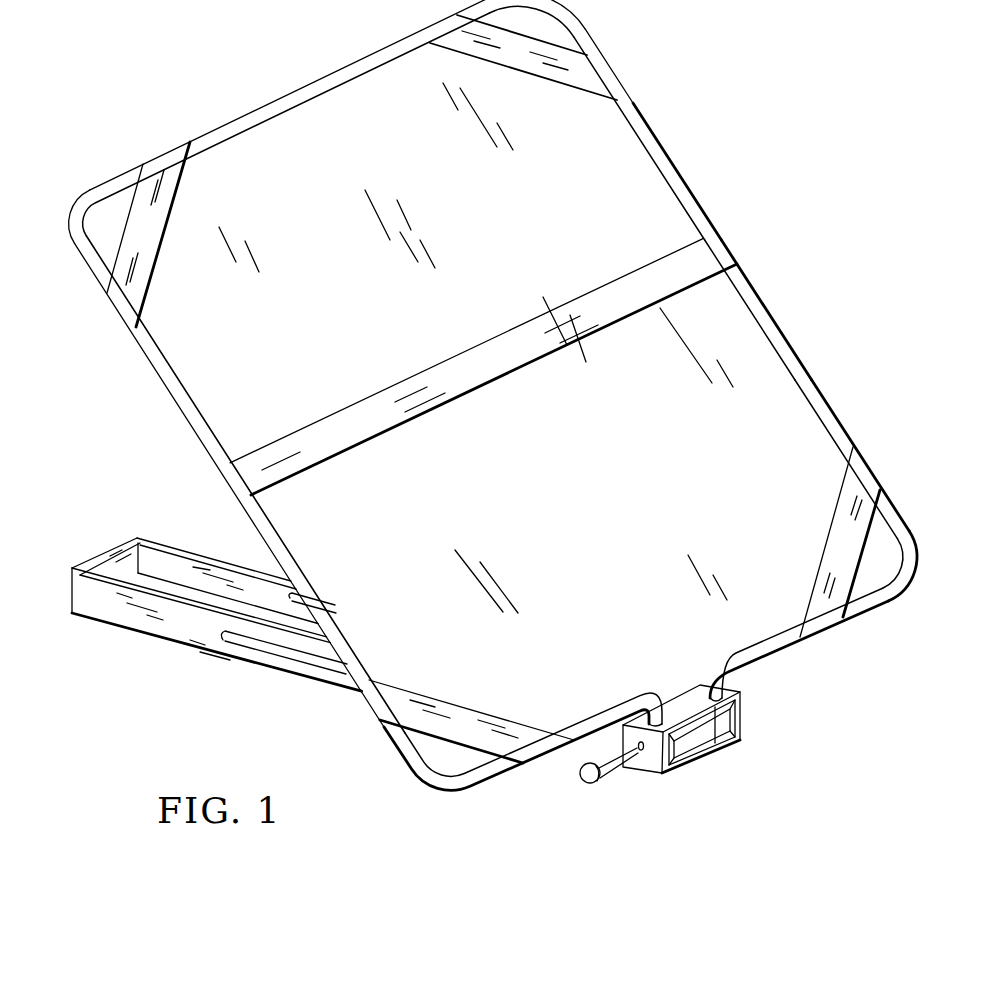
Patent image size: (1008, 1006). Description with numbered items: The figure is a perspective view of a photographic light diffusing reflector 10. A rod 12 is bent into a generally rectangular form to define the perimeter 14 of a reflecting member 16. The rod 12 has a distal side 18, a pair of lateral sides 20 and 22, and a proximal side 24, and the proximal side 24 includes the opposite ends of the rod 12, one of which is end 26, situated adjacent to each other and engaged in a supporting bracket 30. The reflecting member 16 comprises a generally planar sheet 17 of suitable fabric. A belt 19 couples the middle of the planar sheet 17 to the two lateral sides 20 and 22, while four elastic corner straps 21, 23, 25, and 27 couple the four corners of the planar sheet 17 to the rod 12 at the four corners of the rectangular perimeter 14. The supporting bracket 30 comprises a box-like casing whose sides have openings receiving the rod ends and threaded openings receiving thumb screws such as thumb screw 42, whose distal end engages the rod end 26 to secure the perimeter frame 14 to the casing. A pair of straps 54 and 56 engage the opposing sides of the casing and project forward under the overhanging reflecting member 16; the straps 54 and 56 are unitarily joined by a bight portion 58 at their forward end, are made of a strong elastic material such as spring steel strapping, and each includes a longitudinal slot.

The light diffusing reflector 10 is at (146, 693).
The rod 12 is at (342, 77).
The perimeter 14 is at (652, 134).
The reflecting member 16 is at (790, 412).
The planar sheet 17 is at (592, 506).
The distal side 18 is at (252, 122).
The belt 19 is at (703, 257).
The lateral side 20 is at (210, 443).
The elastic corner strap 21 is at (173, 168).
The lateral side 22 is at (778, 340).
The elastic corner strap 23 is at (605, 73).
The proximal side 24 is at (757, 662).
The elastic corner strap 25 is at (536, 758).
The end of rod 26 is at (705, 745).
The elastic corner strap 27 is at (862, 485).
The supporting bracket 30 is at (657, 800).
The thumb screw 42 is at (582, 783).
The strap 54 is at (122, 617).
The strap 56 is at (182, 563).
The bight portion 58 is at (107, 567).